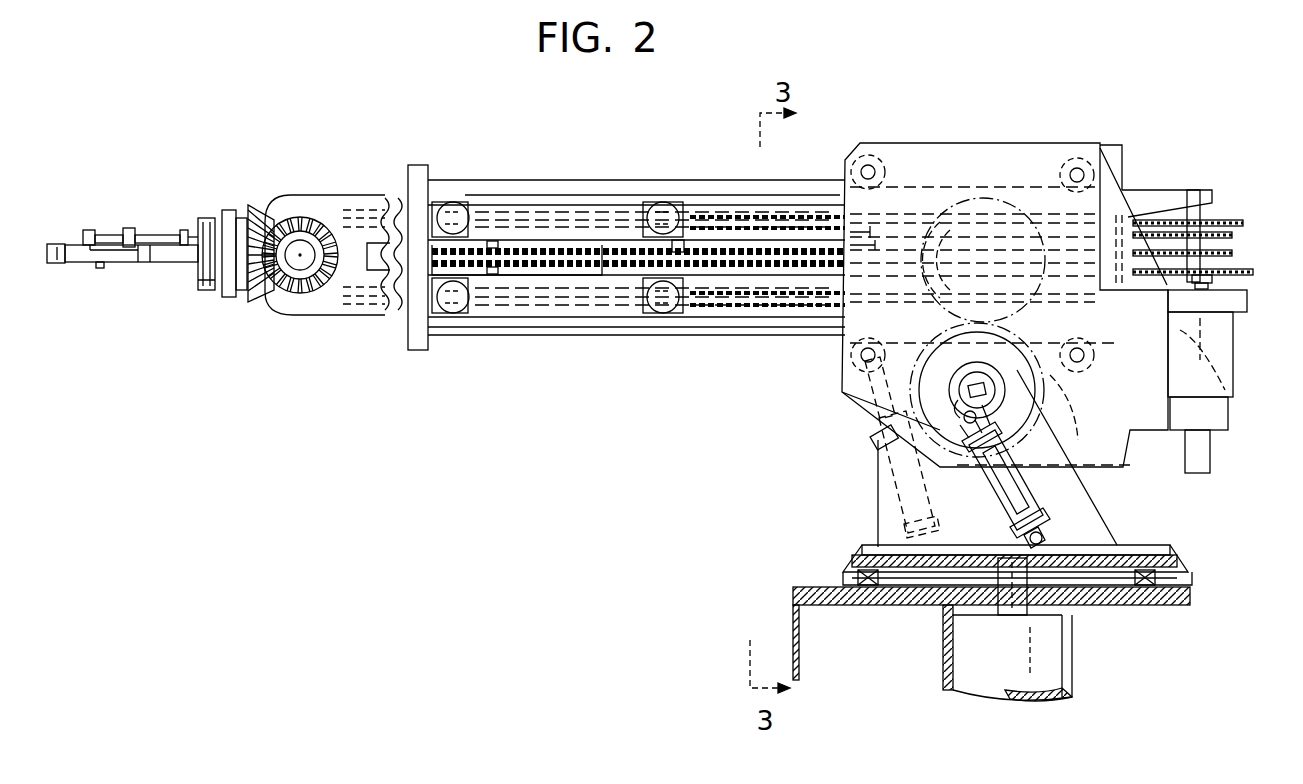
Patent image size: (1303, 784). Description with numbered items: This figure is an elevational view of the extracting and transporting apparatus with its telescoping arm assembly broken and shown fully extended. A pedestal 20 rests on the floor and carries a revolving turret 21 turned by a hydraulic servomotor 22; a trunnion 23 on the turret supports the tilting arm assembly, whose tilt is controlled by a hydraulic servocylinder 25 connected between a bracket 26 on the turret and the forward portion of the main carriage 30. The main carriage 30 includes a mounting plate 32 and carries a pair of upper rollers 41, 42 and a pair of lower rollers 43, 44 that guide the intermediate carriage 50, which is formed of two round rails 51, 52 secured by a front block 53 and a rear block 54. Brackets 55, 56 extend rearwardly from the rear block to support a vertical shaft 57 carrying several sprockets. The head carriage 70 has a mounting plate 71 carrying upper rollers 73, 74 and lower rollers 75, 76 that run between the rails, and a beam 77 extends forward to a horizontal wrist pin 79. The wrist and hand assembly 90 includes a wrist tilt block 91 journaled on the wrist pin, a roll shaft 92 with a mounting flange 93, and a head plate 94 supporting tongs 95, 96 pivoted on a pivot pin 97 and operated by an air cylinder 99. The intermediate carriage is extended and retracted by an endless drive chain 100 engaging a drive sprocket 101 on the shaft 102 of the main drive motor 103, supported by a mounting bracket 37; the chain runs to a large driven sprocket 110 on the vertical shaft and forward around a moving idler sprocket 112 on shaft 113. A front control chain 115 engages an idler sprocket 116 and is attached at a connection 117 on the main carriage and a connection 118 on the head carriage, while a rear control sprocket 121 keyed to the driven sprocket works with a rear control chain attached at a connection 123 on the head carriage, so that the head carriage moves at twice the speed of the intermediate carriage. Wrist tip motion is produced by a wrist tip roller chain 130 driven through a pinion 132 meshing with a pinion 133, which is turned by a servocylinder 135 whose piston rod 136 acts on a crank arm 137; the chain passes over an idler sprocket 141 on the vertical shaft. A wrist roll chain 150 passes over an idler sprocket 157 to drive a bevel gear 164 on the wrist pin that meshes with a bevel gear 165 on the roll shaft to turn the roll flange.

The pedestal 20 is at (792, 625).
The turret 21 is at (1150, 547).
The hydraulic servomotor 22 is at (1068, 652).
The trunnion 23 is at (878, 515).
The hydraulic servocylinder 25 is at (870, 455).
The bracket 26 is at (945, 538).
The main carriage 30 is at (998, 112).
The mounting plate 32 is at (1043, 148).
The mounting bracket 37 is at (1225, 320).
The upper roller 41 is at (878, 158).
The upper roller 42 is at (1085, 158).
The lower roller 43 is at (855, 358).
The lower roller 44 is at (1085, 370).
The intermediate carriage 50 is at (708, 165).
The round rail 51 is at (572, 190).
The round rail 52 is at (575, 337).
The front block 53 is at (420, 165).
The rear block 54 is at (1112, 150).
The bracket 55 is at (1172, 190).
The bracket 56 is at (1232, 385).
The vertical shaft 57 is at (1193, 195).
The head carriage 70 is at (345, 165).
The mounting plate 71 is at (632, 300).
The upper roller 73 is at (455, 202).
The upper roller 74 is at (662, 201).
The lower roller 75 is at (455, 316).
The lower roller 76 is at (668, 316).
The beam 77 is at (380, 205).
The wrist pin 79 is at (300, 262).
The wrist and hand assembly 90 is at (135, 193).
The wrist tilt block 91 is at (228, 210).
The roll shaft 92 is at (258, 290).
The mounting flange 93 is at (240, 290).
The head plate 94 is at (203, 290).
The tong 95 is at (135, 262).
The tong 96 is at (60, 262).
The pivot pin 97 is at (100, 268).
The air cylinder 99 is at (160, 232).
The drive chain 100 is at (748, 300).
The drive sprocket 101 is at (1248, 274).
The shaft 102 is at (1190, 285).
The main drive motor 103 is at (1175, 385).
The driven sprocket 110 is at (1247, 292).
The moving idler sprocket 112 is at (495, 310).
The shaft 113 is at (410, 258).
The front control chain 115 is at (793, 226).
The idler sprocket 116 is at (492, 241).
The connection 117 is at (870, 250).
The connection 118 is at (500, 267).
The rear control sprocket 121 is at (1238, 252).
The connection 123 is at (680, 240).
The wrist tip roller chain 130 is at (738, 215).
The pinion 132 is at (953, 200).
The pinion 133 is at (1062, 412).
The servocylinder 135 is at (1045, 490).
The piston rod 136 is at (1008, 430).
The crank arm 137 is at (962, 402).
The idler sprocket 141 is at (1240, 220).
The wrist roll chain 150 is at (815, 212).
The idler sprocket 157 is at (1234, 235).
The bevel gear 164 is at (335, 275).
The bevel gear 165 is at (272, 197).